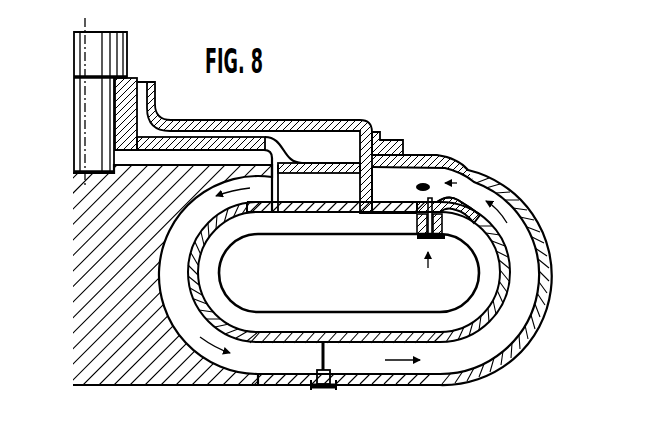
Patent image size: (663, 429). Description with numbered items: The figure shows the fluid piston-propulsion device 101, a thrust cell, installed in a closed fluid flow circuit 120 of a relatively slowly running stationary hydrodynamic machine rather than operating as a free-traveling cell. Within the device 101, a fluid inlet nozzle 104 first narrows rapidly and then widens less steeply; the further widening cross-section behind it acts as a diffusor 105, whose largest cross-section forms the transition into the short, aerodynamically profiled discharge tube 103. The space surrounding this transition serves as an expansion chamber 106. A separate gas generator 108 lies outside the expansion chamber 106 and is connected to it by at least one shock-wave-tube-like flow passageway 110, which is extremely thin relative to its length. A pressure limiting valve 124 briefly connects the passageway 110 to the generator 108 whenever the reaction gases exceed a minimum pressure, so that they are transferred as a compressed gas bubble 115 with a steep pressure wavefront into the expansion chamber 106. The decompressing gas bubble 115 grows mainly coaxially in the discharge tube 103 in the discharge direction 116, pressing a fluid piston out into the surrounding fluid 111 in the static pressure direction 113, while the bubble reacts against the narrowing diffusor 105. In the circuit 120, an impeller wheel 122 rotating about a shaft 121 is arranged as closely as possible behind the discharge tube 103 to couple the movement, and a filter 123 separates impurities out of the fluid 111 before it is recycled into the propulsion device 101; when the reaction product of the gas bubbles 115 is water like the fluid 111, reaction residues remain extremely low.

The fluid piston-propulsion device 101 is at (359, 150).
The discharge tube 103 is at (382, 188).
The fluid inlet nozzle 104 is at (462, 163).
The diffusor 105 is at (408, 182).
The expansion chamber 106 is at (408, 182).
The gas generator 108 is at (305, 273).
The flow passageway 110 is at (446, 238).
The surrounding fluid 111 is at (402, 360).
The static pressure direction 113 is at (510, 193).
The gas bubble 115 is at (413, 180).
The discharge direction 116 is at (242, 188).
The closed fluid flow circuit 120 is at (200, 207).
The shaft 121 is at (124, 51).
The impeller wheel 122 is at (313, 185).
The filter 123 is at (325, 350).
The pressure limiting valve 124 is at (423, 236).